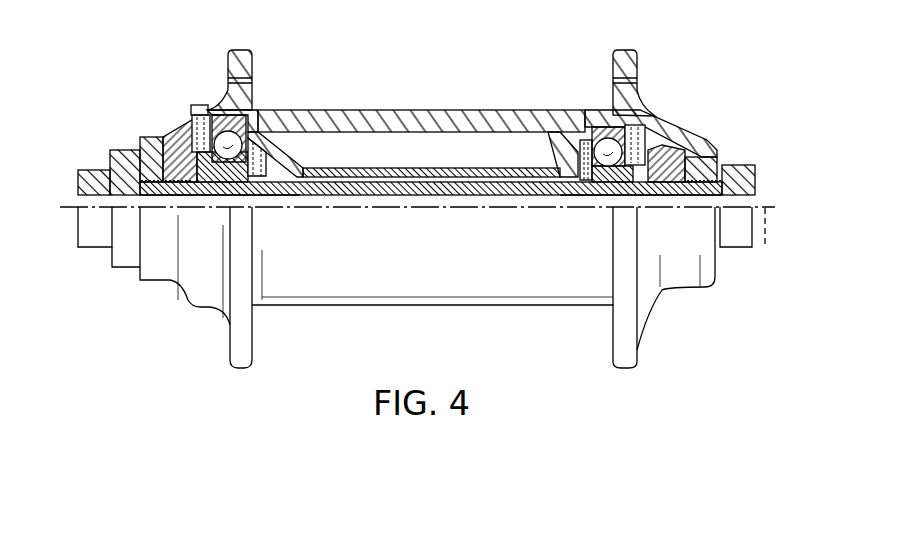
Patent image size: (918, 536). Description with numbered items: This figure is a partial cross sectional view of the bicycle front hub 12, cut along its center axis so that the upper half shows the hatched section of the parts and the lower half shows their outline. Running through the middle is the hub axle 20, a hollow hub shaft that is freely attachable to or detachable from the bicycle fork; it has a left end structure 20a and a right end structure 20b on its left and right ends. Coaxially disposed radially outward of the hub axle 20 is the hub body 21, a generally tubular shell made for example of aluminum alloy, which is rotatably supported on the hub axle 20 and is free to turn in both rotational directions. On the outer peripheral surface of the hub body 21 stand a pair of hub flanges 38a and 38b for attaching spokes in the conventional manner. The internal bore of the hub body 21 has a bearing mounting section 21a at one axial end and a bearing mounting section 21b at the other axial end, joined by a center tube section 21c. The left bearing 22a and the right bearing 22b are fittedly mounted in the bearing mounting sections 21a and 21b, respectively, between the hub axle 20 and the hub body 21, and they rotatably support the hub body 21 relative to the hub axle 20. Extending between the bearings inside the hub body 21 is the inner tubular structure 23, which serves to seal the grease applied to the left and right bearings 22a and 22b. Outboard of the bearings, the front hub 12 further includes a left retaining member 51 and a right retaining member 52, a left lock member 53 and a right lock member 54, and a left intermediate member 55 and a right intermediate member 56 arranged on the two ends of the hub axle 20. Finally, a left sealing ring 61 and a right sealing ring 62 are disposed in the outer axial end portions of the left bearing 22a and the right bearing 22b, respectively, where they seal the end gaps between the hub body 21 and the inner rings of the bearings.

The front hub 12 is at (418, 184).
The hub axle 20 is at (431, 217).
The left end structure 20a is at (241, 204).
The right end structure 20b is at (607, 204).
The hub body 21 is at (462, 91).
The bearing mounting section 21a is at (257, 106).
The bearing mounting section 21b is at (594, 107).
The center tube section 21c is at (371, 108).
The left bearing 22a is at (187, 100).
The right bearing 22b is at (665, 105).
The inner tubular structure 23 is at (398, 164).
The hub flange 38a is at (239, 57).
The hub flange 38b is at (628, 57).
The left retaining member 51 is at (160, 129).
The right retaining member 52 is at (702, 146).
The left lock member 53 is at (93, 166).
The right lock member 54 is at (742, 161).
The left intermediate member 55 is at (131, 137).
The right intermediate member 56 is at (709, 146).
The left sealing ring 61 is at (204, 114).
The right sealing ring 62 is at (634, 126).